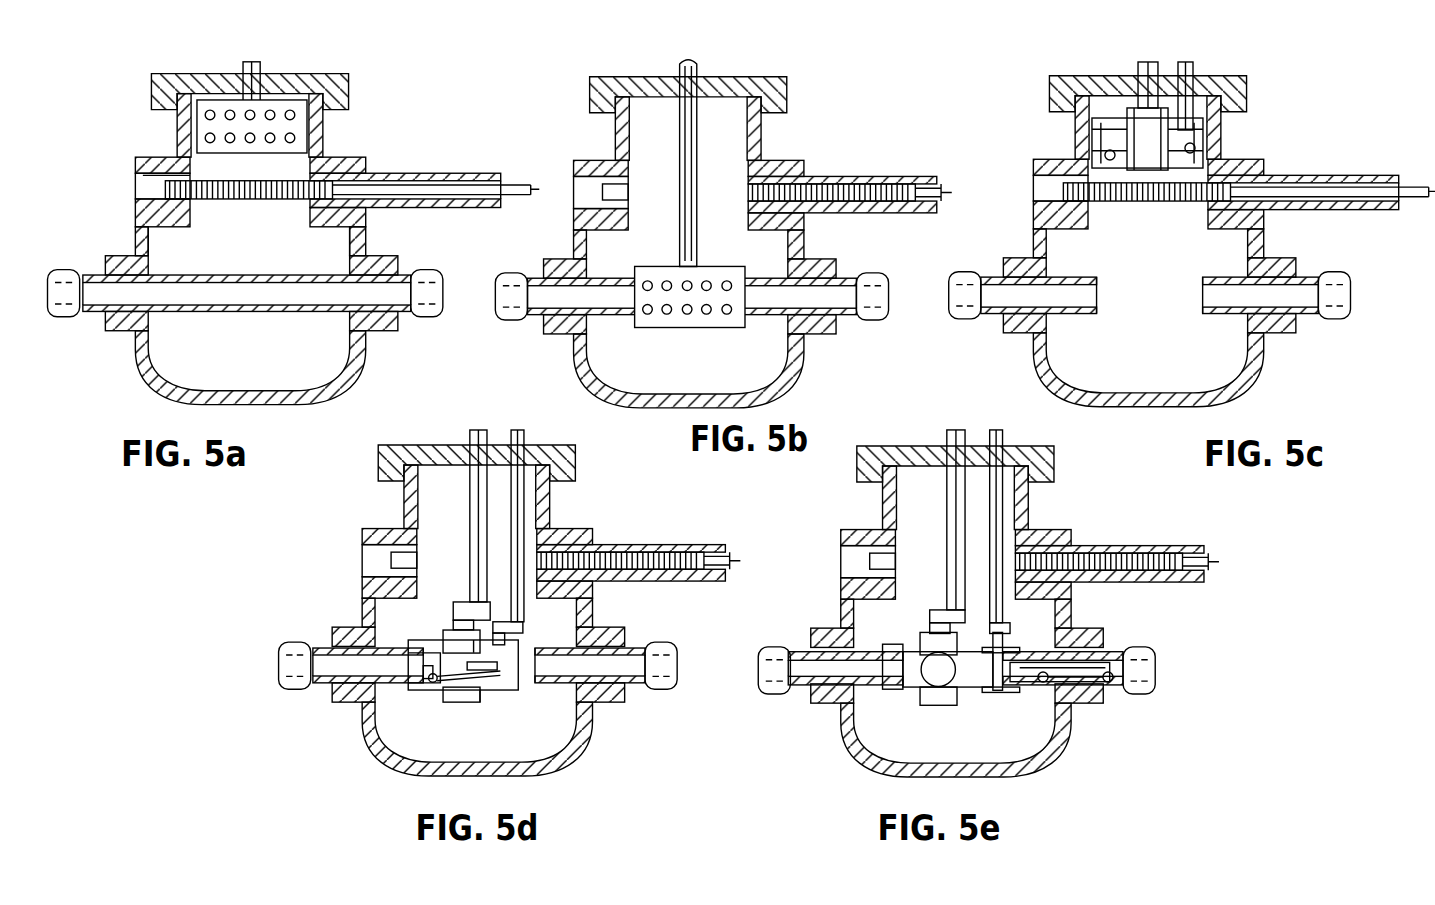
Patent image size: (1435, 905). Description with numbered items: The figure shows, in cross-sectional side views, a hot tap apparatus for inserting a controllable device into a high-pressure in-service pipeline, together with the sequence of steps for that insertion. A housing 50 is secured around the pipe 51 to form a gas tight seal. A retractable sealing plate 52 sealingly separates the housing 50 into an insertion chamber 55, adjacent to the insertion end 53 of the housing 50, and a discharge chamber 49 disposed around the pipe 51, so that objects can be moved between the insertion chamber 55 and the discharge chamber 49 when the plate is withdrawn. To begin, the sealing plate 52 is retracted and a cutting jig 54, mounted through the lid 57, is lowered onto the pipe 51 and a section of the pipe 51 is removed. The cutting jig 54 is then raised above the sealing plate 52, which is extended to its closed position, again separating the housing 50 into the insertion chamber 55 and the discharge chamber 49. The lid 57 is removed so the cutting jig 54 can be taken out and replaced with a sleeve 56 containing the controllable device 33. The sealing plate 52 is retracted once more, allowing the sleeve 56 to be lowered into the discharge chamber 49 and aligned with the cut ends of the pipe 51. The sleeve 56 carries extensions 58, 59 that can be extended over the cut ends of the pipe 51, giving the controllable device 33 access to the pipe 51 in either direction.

In FIG. 5C, the controllable device 33 is at (1196, 127).
In FIG. 5D, the controllable device 33 is at (450, 711).
In FIG. 5A, the discharge chamber 49 is at (248, 241).
In FIG. 5A, the housing 50 is at (317, 175).
In FIG. 5B, the housing 50 is at (755, 172).
In FIG. 5C, the housing 50 is at (1188, 188).
In FIG. 5E, the housing 50 is at (1022, 548).
In FIG. 5A, the pipe 51 is at (247, 269).
In FIG. 5B, the pipe 51 is at (691, 268).
In FIG. 5C, the pipe 51 is at (1157, 268).
In FIG. 5A, the sealing plate 52 is at (317, 155).
In FIG. 5B, the sealing plate 52 is at (850, 157).
In FIG. 5C, the sealing plate 52 is at (1249, 164).
In FIG. 5D, the sealing plate 52 is at (639, 520).
In FIG. 5E, the sealing plate 52 is at (1117, 533).
In FIG. 5A, the insertion end 53 is at (257, 65).
In FIG. 5A, the cutting jig 54 is at (240, 87).
In FIG. 5B, the cutting jig 54 is at (701, 324).
In FIG. 5A, the insertion chamber 55 is at (144, 167).
In FIG. 5C, the insertion chamber 55 is at (1106, 96).
In FIG. 5C, the sleeve 56 is at (1100, 122).
In FIG. 5D, the sleeve 56 is at (465, 682).
In FIG. 5E, the sleeve 56 is at (963, 683).
In FIG. 5A, the lid 57 is at (275, 62).
In FIG. 5B, the lid 57 is at (725, 143).
In FIG. 5C, the lid 57 is at (1202, 76).
In FIG. 5D, the lid 57 is at (459, 513).
In FIG. 5E, the lid 57 is at (952, 512).
In FIG. 5E, the extension 58 is at (1069, 689).
In FIG. 5E, the extension 59 is at (900, 702).